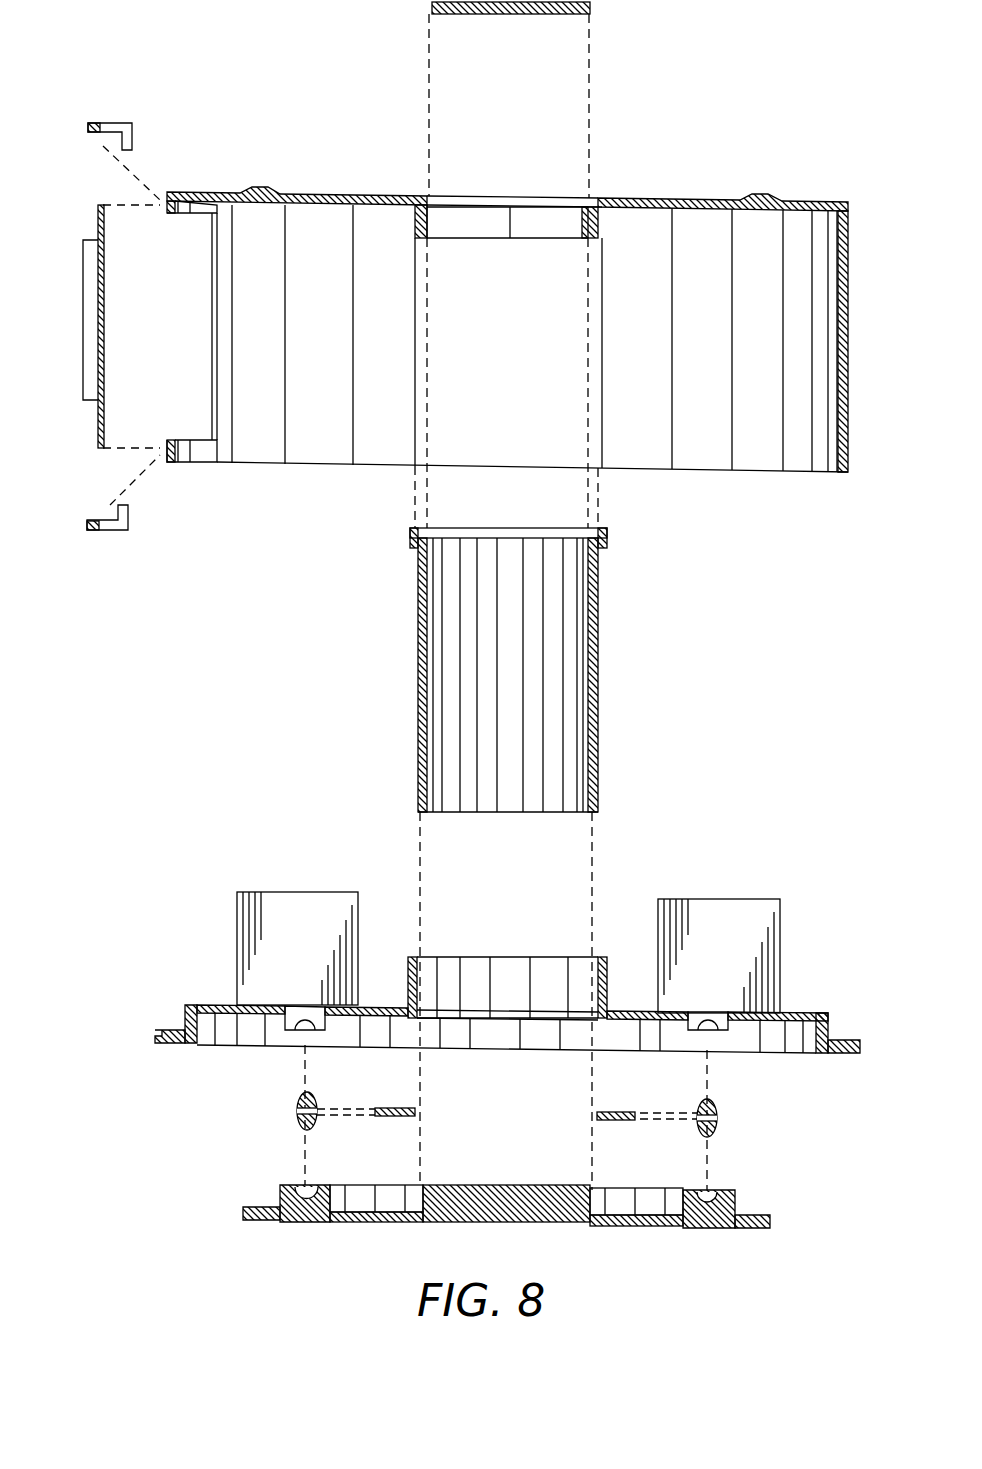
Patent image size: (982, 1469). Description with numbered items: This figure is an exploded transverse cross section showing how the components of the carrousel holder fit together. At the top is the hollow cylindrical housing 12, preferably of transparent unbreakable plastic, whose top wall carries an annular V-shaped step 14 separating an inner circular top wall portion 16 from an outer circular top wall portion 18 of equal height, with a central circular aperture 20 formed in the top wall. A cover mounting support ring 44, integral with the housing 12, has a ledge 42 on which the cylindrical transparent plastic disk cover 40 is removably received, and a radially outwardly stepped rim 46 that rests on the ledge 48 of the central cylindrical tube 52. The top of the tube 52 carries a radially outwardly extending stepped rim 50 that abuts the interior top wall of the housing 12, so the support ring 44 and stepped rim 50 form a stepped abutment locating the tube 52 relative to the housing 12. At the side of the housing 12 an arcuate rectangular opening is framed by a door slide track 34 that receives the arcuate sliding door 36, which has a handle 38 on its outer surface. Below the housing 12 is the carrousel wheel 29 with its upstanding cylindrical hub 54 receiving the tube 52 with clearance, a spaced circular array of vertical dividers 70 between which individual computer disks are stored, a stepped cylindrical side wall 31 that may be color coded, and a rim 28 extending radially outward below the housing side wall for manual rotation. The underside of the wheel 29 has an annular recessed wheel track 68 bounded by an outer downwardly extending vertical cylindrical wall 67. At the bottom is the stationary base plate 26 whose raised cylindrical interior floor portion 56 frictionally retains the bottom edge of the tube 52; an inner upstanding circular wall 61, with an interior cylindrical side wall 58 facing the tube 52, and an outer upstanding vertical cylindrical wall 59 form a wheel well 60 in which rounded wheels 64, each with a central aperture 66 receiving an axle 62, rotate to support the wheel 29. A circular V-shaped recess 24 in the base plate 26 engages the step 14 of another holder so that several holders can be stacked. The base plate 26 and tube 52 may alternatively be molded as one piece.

The housing 12 is at (509, 331).
The annular V-shaped step 14 is at (262, 192).
The inner circular top wall portion 16 is at (702, 198).
The outer circular top wall portion 18 is at (822, 202).
The central circular aperture 20 is at (490, 196).
The circular V-shaped recess 24 is at (243, 1213).
The stationary base plate 26 is at (748, 1228).
The rim 28 is at (466, 1032).
The carrousel wheel 29 is at (795, 1013).
The stepped cylindrical side wall 31 is at (185, 1010).
The door slide track 34 is at (116, 123).
The sliding door 36 is at (100, 410).
The handle 38 is at (96, 305).
The disk cover 40 is at (590, 7).
The ledge 42 is at (592, 200).
The cover mounting support ring 44 is at (522, 228).
The stepped rim 46 is at (600, 215).
The ledge 48 is at (605, 530).
The stepped rim 50 is at (608, 546).
The central cylindrical tube 52 is at (535, 648).
The hub 54 is at (455, 957).
The raised cylindrical interior floor portion 56 is at (494, 1205).
The interior cylindrical side wall 58 is at (348, 1185).
The outer upstanding vertical cylindrical wall 59 is at (287, 1190).
The wheel well 60 is at (725, 1195).
The inner upstanding circular wall 61 is at (695, 1190).
The axle 62 is at (605, 1112).
The rounded wheels 64 is at (717, 1108).
The central aperture 66 is at (717, 1121).
The outer downwardly extending vertical cylindrical wall 67 is at (722, 1031).
The annular recessed wheel track 68 is at (300, 1031).
The vertical dividers 70 is at (712, 899).